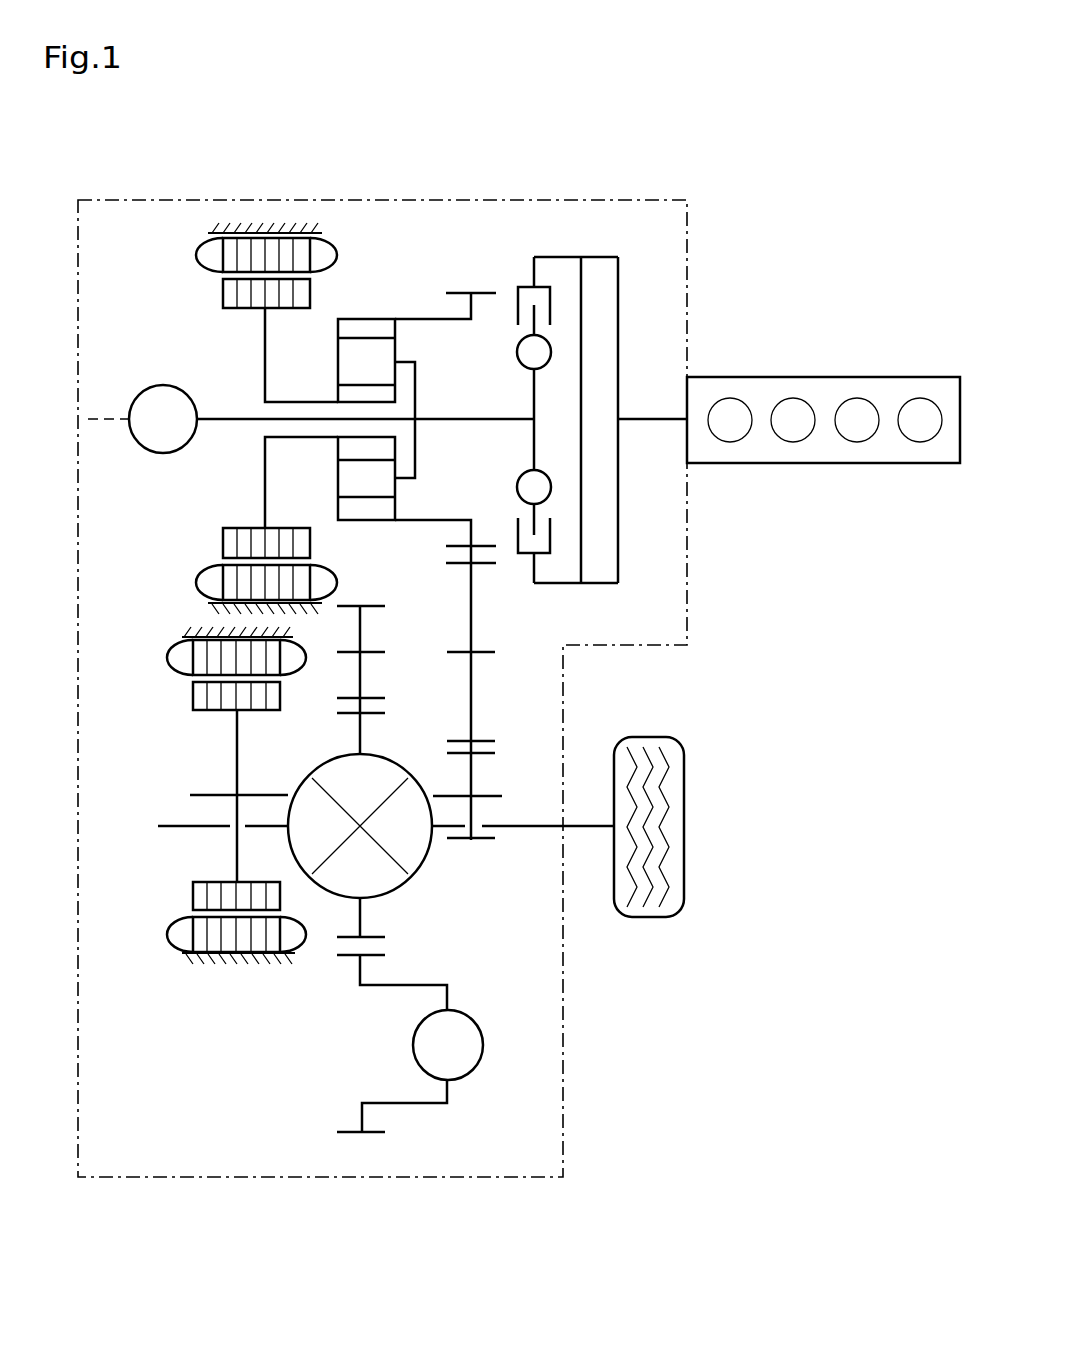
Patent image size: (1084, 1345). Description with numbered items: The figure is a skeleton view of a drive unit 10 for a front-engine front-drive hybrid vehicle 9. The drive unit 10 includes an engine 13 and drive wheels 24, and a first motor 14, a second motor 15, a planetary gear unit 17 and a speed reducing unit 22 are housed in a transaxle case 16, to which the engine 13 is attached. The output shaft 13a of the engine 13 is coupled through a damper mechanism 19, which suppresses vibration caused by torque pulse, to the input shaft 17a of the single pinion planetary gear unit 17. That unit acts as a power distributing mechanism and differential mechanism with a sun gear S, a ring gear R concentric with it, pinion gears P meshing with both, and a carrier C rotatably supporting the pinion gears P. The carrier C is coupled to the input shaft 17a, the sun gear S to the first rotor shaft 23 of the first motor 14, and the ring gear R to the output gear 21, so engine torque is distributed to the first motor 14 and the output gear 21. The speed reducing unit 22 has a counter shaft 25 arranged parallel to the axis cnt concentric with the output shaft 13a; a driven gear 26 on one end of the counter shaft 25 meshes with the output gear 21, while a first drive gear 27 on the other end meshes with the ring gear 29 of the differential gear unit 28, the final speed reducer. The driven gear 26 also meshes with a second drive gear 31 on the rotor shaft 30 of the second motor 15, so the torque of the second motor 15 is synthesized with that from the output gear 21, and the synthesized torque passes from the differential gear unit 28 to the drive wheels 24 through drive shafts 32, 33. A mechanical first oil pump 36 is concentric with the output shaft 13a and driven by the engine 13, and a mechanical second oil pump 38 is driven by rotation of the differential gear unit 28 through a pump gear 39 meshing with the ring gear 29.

The hybrid vehicle 9 is at (766, 184).
The drive unit 10 is at (743, 240).
The engine 13 is at (772, 377).
The output shaft 13a is at (653, 422).
The first motor 14 is at (176, 239).
The second motor 15 is at (146, 633).
The transaxle case 16 is at (463, 200).
The planetary gear unit 17 is at (379, 383).
The input shaft 17a is at (470, 423).
The damper mechanism 19 is at (632, 276).
The output gear 21 is at (482, 290).
The speed reducing unit 22 is at (548, 699).
The first rotor shaft 23 is at (298, 438).
The drive wheel 24 is at (650, 737).
The counter shaft 25 is at (481, 652).
The driven gear 26 is at (495, 563).
The first drive gear 27 is at (377, 607).
The differential gear unit 28 is at (418, 730).
The ring gear 29 is at (378, 937).
The rotor shaft 30 is at (213, 793).
The second drive gear 31 is at (495, 753).
The drive shaft 32 is at (195, 830).
The drive shaft 33 is at (528, 835).
The first oil pump 36 is at (162, 383).
The second oil pump 38 is at (465, 1010).
The pump gear 39 is at (347, 960).
The ring gear R is at (357, 326).
The pinion gears P is at (352, 362).
The sun gear S is at (352, 390).
The carrier C is at (415, 373).
The axis cnt is at (97, 416).